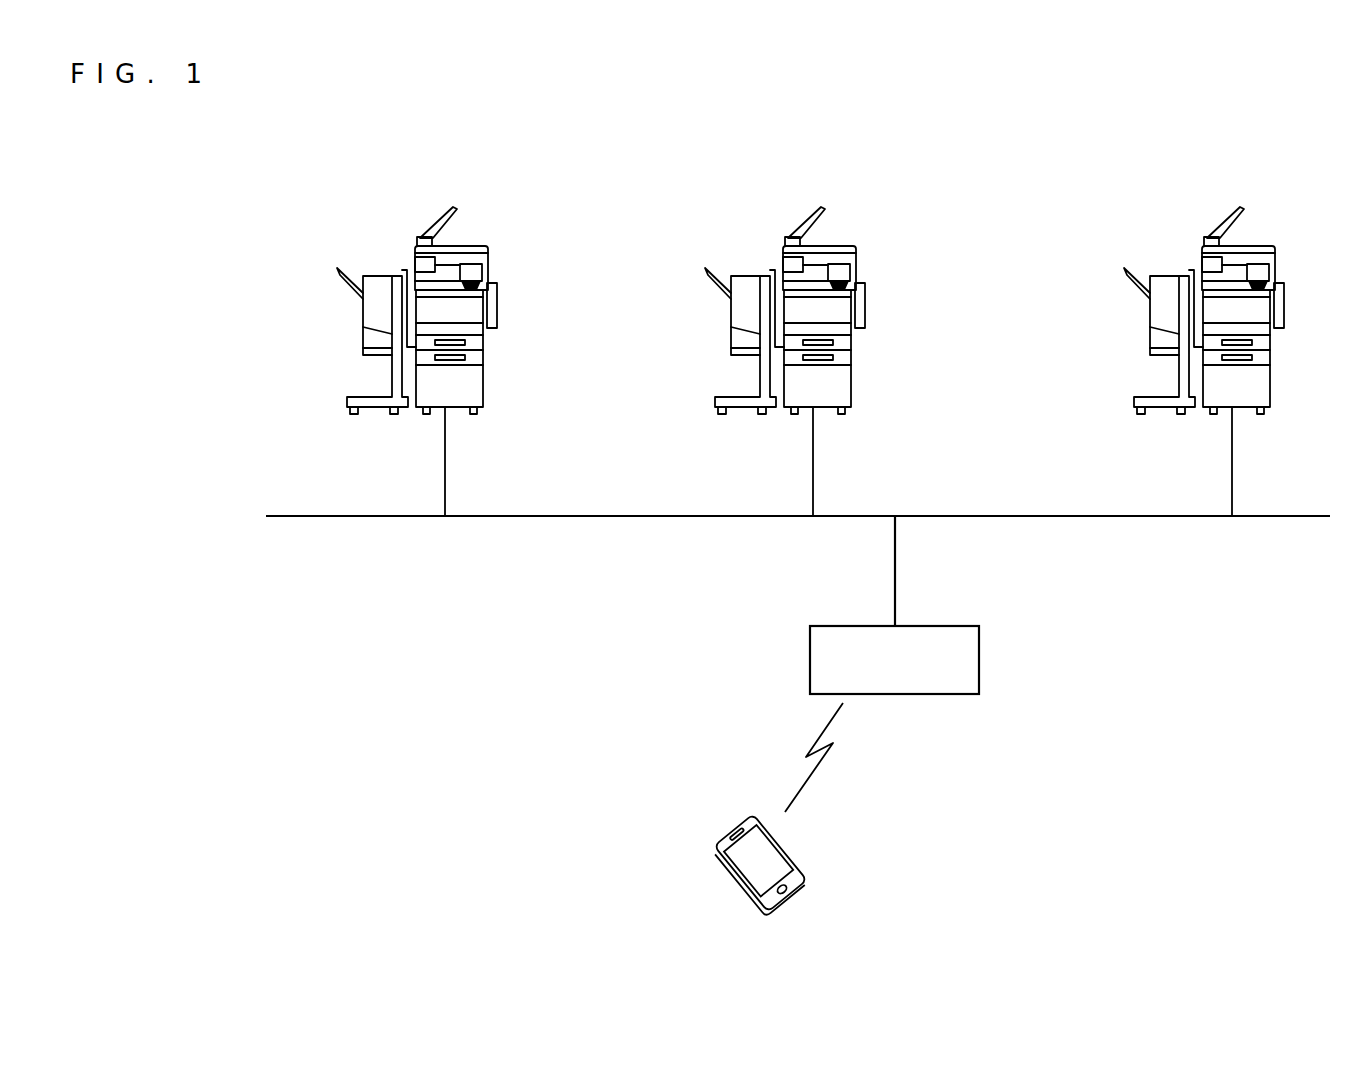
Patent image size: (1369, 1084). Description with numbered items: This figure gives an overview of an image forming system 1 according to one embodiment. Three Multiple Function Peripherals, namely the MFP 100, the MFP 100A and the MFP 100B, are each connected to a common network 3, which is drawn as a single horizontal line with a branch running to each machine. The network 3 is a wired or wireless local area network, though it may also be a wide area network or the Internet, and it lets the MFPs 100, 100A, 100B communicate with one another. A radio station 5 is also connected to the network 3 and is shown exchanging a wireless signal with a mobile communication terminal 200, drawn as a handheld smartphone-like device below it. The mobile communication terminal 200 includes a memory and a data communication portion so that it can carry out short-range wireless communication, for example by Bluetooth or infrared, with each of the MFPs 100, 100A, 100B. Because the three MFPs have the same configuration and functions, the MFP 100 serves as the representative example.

The image forming system 1 is at (366, 125).
The network 3 is at (552, 517).
The radio station 5 is at (953, 626).
The MFP 100 is at (477, 238).
The MFP 100A is at (845, 238).
The MFP 100B is at (1262, 238).
The mobile communication terminal 200 is at (742, 890).